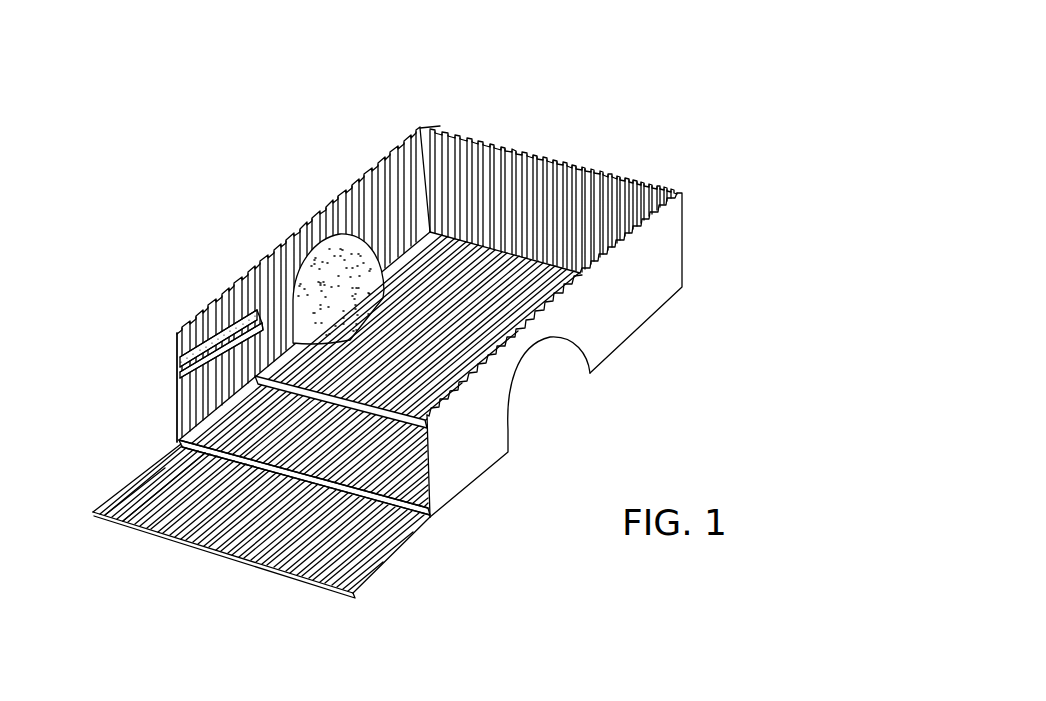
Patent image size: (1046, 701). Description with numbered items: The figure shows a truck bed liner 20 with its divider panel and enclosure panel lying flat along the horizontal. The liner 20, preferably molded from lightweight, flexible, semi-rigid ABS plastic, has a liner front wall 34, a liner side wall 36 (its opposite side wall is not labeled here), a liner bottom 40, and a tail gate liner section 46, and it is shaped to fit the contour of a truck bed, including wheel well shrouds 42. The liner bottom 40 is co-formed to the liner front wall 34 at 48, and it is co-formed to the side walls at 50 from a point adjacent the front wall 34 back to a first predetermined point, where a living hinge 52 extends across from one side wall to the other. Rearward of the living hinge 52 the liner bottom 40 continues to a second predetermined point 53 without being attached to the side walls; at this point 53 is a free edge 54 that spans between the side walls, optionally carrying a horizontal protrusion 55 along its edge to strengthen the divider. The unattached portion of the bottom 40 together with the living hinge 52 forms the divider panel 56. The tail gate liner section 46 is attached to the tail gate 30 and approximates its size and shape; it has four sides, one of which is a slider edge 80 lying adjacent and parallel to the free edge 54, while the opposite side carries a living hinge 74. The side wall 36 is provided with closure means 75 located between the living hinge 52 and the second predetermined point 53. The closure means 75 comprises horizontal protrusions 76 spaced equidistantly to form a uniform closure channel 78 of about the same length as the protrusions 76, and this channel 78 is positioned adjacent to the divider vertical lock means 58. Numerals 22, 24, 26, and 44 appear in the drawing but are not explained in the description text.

The truck bed liner 20 is at (393, 328).
The side wall 22 is at (610, 333).
The front wall corner 24 is at (400, 132).
The rear wall 26 is at (591, 151).
The tail gate 30 is at (295, 585).
The liner front wall 34 is at (453, 136).
The liner side wall 36 is at (350, 193).
The liner bottom 40 is at (431, 421).
The wheel well shrouds 42 is at (532, 398).
The side wall 44 is at (299, 258).
The tail gate liner section 46 is at (229, 545).
The co-formed junction of liner bottom and front wall 48 is at (577, 288).
The co-formed junction of liner bottom and side walls 50 is at (438, 128).
The living hinge 52 is at (430, 459).
The second predetermined point 53 is at (407, 522).
The free edge 54 is at (175, 443).
The horizontal protrusion 55 is at (248, 560).
The divider panel 56 is at (373, 490).
The divider vertical lock means 58 is at (140, 316).
The living hinge 74 is at (126, 522).
The closure means 75 is at (159, 348).
The horizontal protrusions 76 is at (170, 366).
The closure channel 78 is at (170, 378).
The slider edge 80 is at (142, 470).